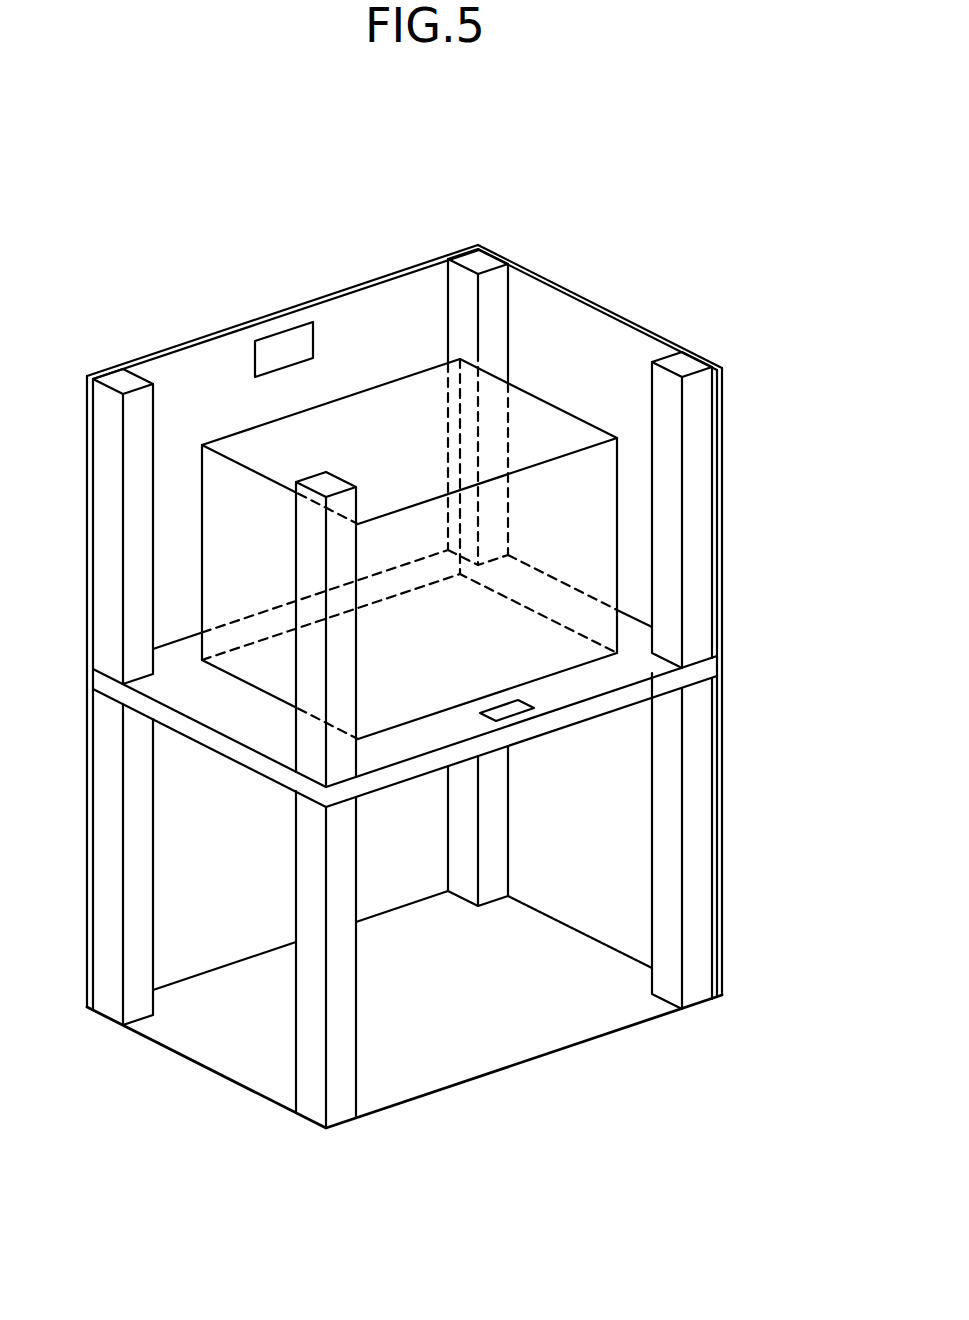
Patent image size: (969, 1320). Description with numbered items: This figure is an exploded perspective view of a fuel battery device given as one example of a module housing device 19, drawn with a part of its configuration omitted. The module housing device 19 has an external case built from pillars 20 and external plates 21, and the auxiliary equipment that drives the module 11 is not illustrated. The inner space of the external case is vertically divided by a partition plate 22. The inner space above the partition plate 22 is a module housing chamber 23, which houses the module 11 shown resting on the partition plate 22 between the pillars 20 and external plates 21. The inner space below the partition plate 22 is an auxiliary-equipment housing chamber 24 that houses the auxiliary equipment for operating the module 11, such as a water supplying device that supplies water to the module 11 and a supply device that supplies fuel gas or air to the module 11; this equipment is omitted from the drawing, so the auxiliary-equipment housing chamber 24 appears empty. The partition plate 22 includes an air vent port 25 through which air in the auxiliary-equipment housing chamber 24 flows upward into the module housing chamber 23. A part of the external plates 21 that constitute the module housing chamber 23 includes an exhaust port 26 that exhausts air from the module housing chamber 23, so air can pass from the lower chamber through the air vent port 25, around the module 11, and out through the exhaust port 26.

The module housing device 19 is at (178, 126).
The pillars 20 is at (123, 377).
The external plates 21 is at (533, 264).
The module housing chamber 23 is at (560, 338).
The partition plate 22 is at (697, 677).
The auxiliary-equipment housing chamber 24 is at (205, 860).
The air vent port 25 is at (523, 707).
The exhaust port 26 is at (277, 345).
The module 11 is at (548, 422).